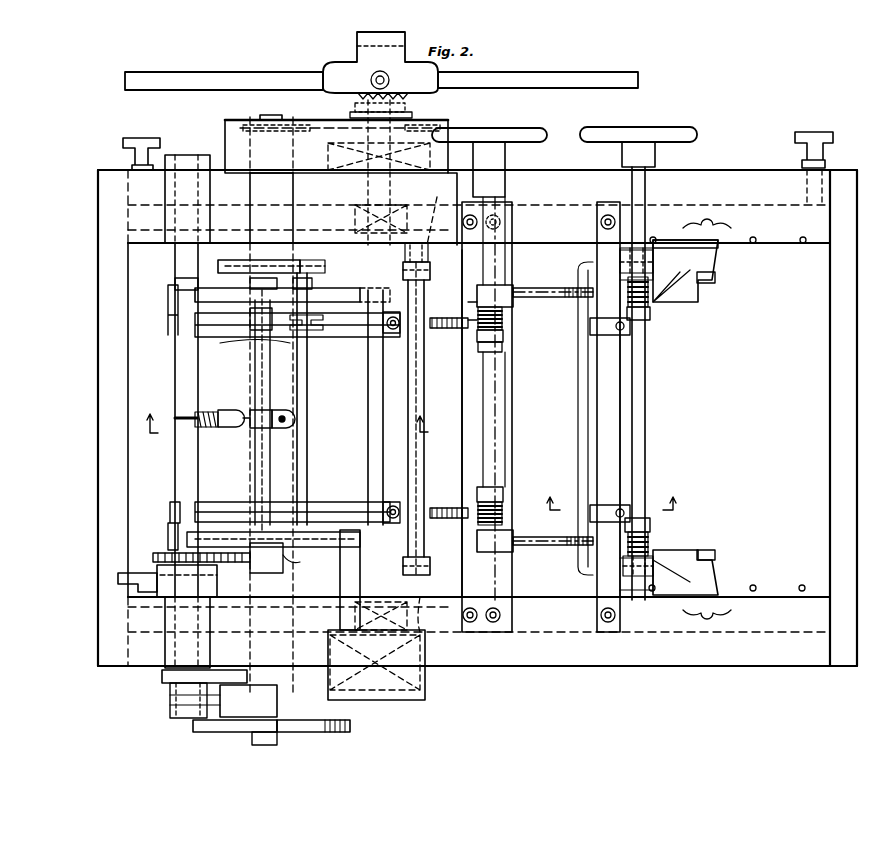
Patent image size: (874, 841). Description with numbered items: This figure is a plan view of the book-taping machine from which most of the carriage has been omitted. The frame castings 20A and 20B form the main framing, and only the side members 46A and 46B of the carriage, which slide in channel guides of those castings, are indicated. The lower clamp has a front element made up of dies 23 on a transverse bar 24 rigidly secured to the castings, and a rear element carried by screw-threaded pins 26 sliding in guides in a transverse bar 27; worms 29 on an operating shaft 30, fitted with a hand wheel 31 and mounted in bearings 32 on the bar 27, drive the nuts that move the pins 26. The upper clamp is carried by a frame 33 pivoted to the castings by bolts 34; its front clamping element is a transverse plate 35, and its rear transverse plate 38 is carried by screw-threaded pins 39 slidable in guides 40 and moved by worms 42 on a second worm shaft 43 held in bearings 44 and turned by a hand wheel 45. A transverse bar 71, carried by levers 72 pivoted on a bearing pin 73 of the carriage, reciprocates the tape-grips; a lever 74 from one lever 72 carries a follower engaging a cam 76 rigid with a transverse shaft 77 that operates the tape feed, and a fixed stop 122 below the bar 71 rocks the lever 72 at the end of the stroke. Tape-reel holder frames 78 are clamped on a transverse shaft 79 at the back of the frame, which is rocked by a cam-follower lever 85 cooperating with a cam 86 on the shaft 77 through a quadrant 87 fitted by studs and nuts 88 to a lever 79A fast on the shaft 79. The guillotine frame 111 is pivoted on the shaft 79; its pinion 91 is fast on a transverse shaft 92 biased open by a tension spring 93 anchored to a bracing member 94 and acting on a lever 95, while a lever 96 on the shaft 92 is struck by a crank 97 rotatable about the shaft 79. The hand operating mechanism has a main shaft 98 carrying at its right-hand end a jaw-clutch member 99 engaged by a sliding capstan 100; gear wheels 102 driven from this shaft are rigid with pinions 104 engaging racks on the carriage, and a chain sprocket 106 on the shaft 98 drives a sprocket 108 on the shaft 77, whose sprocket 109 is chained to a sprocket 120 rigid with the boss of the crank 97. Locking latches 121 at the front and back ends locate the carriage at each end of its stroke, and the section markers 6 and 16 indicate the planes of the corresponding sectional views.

The frame casting 20A is at (485, 668).
The frame casting 20B is at (745, 185).
The dies 23 is at (632, 330).
The transverse bar 24 is at (610, 400).
The screw-threaded pins 26 is at (437, 329).
The transverse bar 27 is at (462, 398).
The worms 29 is at (503, 322).
The operating shaft 30 is at (506, 200).
The hand wheel 31 is at (537, 130).
The bearings 32 is at (477, 292).
The upper clamp frame 33 is at (672, 284).
The bolts 34 is at (717, 278).
The transverse plate 35 is at (578, 370).
The transverse plate 38 is at (512, 398).
The screw-threaded pins 39 is at (560, 276).
The guides 40 is at (650, 300).
The worms 42 is at (656, 266).
The second operating worm shaft 43 is at (640, 370).
The bearings 44 is at (612, 260).
The hand wheel 45 is at (672, 127).
The carriage side member 46A is at (420, 640).
The carriage side member 46B is at (437, 190).
The section line 6 is at (282, 426).
The section line 16 is at (610, 494).
The transverse bar 71 is at (424, 462).
The levers 72 is at (430, 272).
The bearing pin 73 is at (427, 252).
The lever 74 is at (353, 268).
The cam 76 is at (240, 264).
The shaft 77 is at (262, 116).
The tape-reel holder frames 78 is at (247, 338).
The transverse shaft 79 is at (175, 382).
The lever 79A is at (162, 677).
The cam-follower lever 85 is at (228, 720).
The cam 86 is at (350, 727).
The quadrant 87 is at (238, 650).
The studs and nuts 88 is at (178, 693).
The pinion 91 is at (250, 348).
The transverse shaft 92 is at (258, 400).
The tension spring 93 is at (209, 427).
The transverse bracing member 94 is at (182, 401).
The lever 95 is at (248, 427).
The lever 96 is at (242, 586).
The crank 97 is at (118, 568).
The main shaft 98 is at (370, 406).
The jaw-clutch member 99 is at (357, 50).
The capstan 100 is at (638, 80).
The gear wheels 102 is at (328, 156).
The pinions 104 is at (355, 216).
The chain sprocket 106 is at (414, 116).
The sprocket 108 is at (225, 128).
The sprocket 109 is at (290, 563).
The guillotine frame 111 is at (168, 303).
The sprocket 120 is at (150, 553).
The locking latches 121 is at (160, 142).
The stop 122 is at (722, 258).